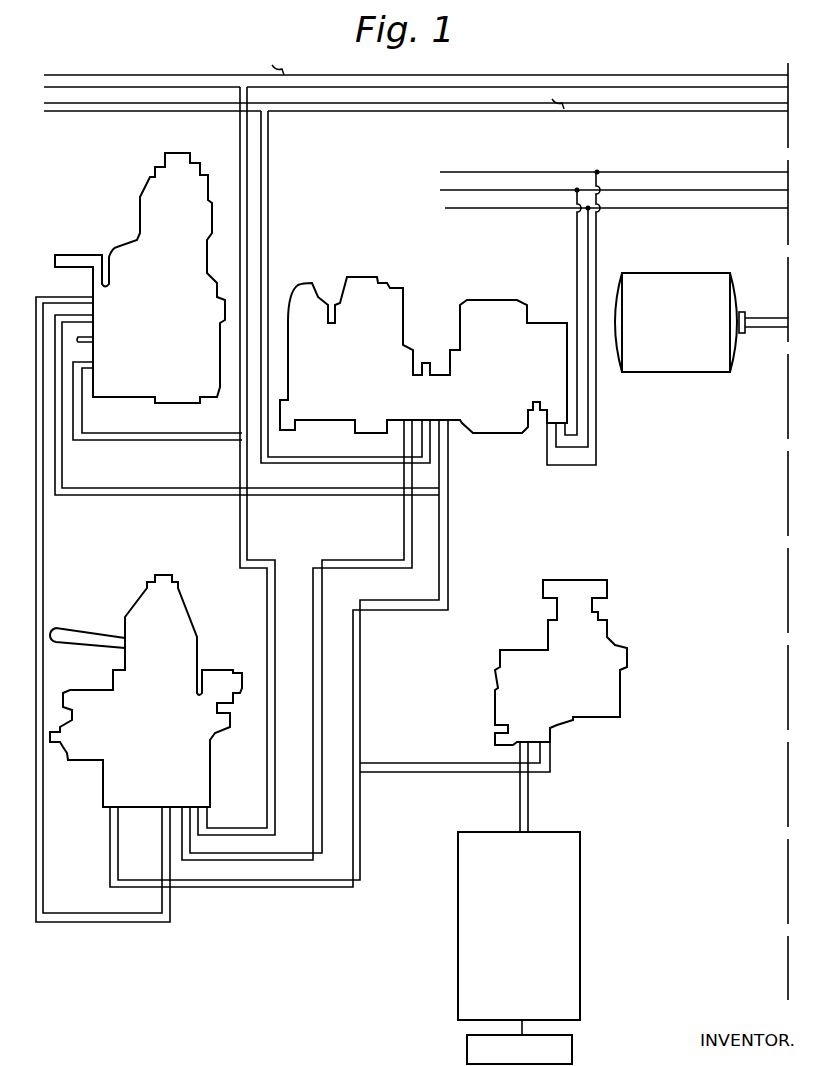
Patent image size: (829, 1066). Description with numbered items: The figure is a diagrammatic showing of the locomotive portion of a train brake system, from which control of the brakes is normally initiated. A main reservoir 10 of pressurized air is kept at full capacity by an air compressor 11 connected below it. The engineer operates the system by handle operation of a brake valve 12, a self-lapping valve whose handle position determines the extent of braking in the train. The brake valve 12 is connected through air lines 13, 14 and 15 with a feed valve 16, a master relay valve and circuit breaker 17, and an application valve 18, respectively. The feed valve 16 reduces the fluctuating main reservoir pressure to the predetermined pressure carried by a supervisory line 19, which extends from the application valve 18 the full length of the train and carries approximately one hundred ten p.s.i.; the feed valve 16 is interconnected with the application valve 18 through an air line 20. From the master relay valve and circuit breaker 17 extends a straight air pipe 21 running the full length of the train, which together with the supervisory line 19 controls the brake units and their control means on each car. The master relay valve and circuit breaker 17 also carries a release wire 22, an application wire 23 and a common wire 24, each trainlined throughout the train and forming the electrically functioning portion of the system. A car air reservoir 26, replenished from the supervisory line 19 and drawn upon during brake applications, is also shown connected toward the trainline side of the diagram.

The main reservoir 10 is at (572, 940).
The air compressor 11 is at (466, 1040).
The brake valve 12 is at (203, 768).
The air line 13 is at (305, 888).
The air line 14 is at (318, 805).
The air line 15 is at (45, 549).
The feed valve 16 is at (620, 682).
The master relay valve and circuit breaker 17 is at (495, 433).
The application valve 18 is at (128, 396).
The supervisory line 19 is at (572, 80).
The air line 20 is at (176, 497).
The straight air pipe 21 is at (368, 113).
The release wire 22 is at (662, 172).
The application wire 23 is at (717, 189).
The common wire 24 is at (730, 210).
The car air reservoir 26 is at (674, 373).